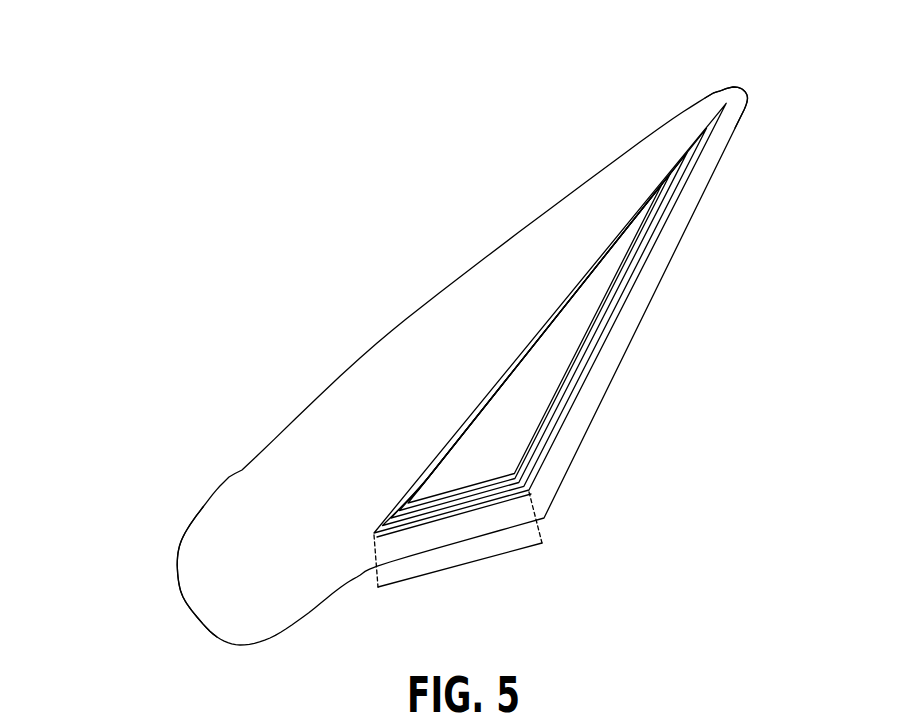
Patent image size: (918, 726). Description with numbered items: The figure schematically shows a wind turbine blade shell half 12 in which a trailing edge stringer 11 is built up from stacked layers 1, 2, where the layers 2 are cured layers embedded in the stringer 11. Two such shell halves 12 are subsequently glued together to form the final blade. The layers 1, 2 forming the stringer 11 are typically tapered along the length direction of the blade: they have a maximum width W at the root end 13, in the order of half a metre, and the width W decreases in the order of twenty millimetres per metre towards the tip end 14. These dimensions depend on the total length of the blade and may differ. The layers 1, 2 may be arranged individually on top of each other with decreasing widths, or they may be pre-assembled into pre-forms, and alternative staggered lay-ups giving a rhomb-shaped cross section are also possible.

The layer 1 is at (538, 438).
The cured layer 2 is at (548, 408).
The trailing edge stringer 11 is at (548, 367).
The wind turbine blade shell half 12 is at (674, 299).
The root end 13 is at (170, 602).
The tip end 14 is at (761, 83).
The width W is at (465, 564).